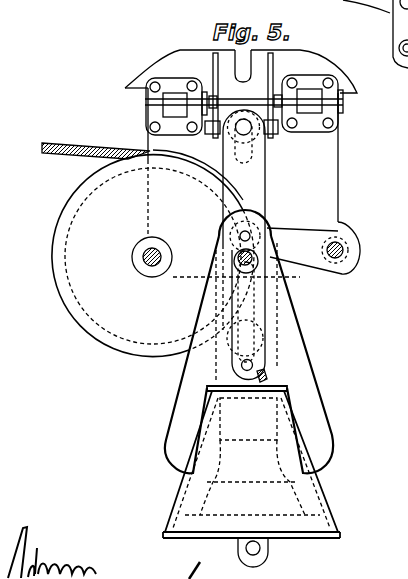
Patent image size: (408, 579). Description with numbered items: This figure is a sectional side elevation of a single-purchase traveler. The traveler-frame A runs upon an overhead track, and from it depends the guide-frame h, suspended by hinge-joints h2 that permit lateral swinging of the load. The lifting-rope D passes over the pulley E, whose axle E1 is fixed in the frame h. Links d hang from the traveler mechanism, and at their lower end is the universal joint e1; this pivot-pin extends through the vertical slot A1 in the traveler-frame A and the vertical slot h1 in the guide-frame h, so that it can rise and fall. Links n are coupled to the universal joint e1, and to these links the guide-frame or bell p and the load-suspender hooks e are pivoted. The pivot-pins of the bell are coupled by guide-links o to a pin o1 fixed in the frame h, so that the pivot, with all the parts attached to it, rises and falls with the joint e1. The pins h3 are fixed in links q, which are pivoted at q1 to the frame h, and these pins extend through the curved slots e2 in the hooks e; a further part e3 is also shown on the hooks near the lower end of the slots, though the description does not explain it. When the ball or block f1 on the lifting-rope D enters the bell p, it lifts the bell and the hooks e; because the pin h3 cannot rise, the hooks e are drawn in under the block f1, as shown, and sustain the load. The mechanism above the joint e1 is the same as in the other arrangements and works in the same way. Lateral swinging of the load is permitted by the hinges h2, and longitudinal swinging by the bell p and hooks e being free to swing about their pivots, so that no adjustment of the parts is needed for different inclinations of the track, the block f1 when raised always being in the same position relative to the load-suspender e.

The traveler-frame A is at (241, 143).
The vertical slot in the frame A1 is at (247, 71).
The links d is at (213, 60).
The hinge-joints h2 is at (244, 105).
The pivot-pin / universal joint e1 is at (240, 130).
The vertical slot in the guide-frame h1 is at (265, 151).
The links n is at (244, 220).
The guide-frame h is at (284, 204).
The pulley E is at (135, 351).
The axle of the pulley E1 is at (143, 257).
The lifting-rope D is at (96, 151).
The guide-links o is at (313, 248).
The pin o1 is at (344, 251).
The links q is at (246, 311).
The pivot of the links q q1 is at (256, 265).
The curved slots in the hooks e2 is at (263, 334).
The pins h3 is at (242, 366).
The stop piece e3 is at (267, 377).
The load-suspender hooks e is at (249, 341).
The guide-frame or bell p is at (322, 500).
The ball or block f1 is at (247, 413).